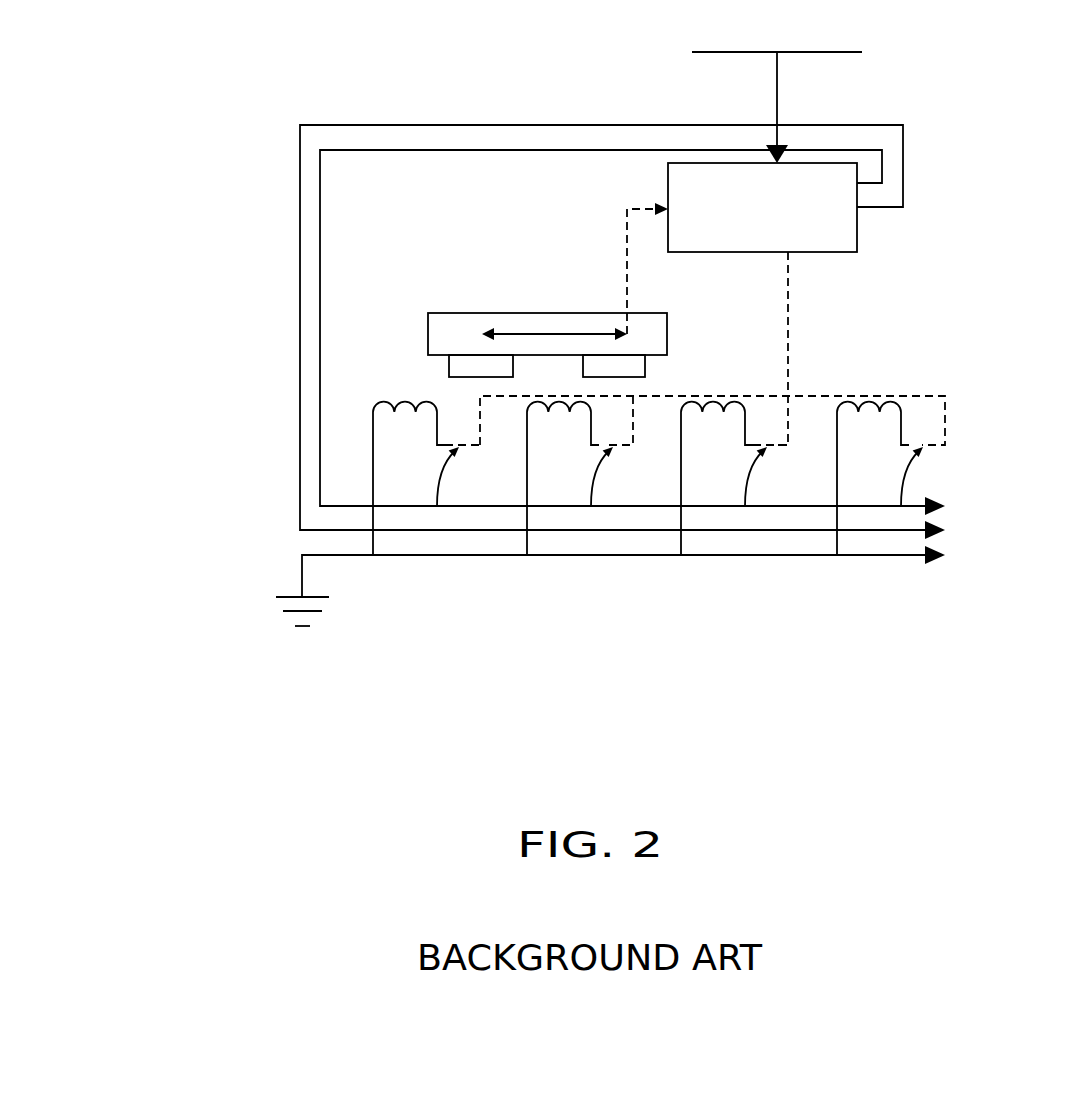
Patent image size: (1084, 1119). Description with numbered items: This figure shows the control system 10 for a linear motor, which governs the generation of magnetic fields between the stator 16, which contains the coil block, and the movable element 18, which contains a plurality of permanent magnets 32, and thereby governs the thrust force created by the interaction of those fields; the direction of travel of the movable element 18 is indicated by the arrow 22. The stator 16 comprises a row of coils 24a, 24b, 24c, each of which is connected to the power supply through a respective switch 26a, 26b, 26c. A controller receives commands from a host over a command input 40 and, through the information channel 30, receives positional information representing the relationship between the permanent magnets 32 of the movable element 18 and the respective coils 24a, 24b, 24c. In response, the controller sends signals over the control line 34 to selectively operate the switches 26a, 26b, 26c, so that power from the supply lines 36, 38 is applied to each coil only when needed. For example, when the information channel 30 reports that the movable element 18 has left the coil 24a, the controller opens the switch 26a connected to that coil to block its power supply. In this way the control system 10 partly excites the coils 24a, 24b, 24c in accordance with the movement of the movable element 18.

The stepping motor drive system 10 is at (205, 226).
The stator 16 is at (368, 400).
The movable element 18 is at (472, 313).
The direction of movement arrow 22 is at (530, 334).
The coil 24a is at (373, 459).
The coil 24b is at (527, 445).
The coil 24c is at (681, 445).
The switch 26a is at (418, 468).
The switch 26b is at (592, 445).
The switch 26c is at (745, 445).
The information channel 30 is at (648, 205).
The permanent magnets 32 is at (463, 365).
The switch control signal line 34 is at (790, 328).
The outer supply line 36 is at (462, 125).
The inner supply line 38 is at (517, 150).
The command input line 40 is at (777, 92).